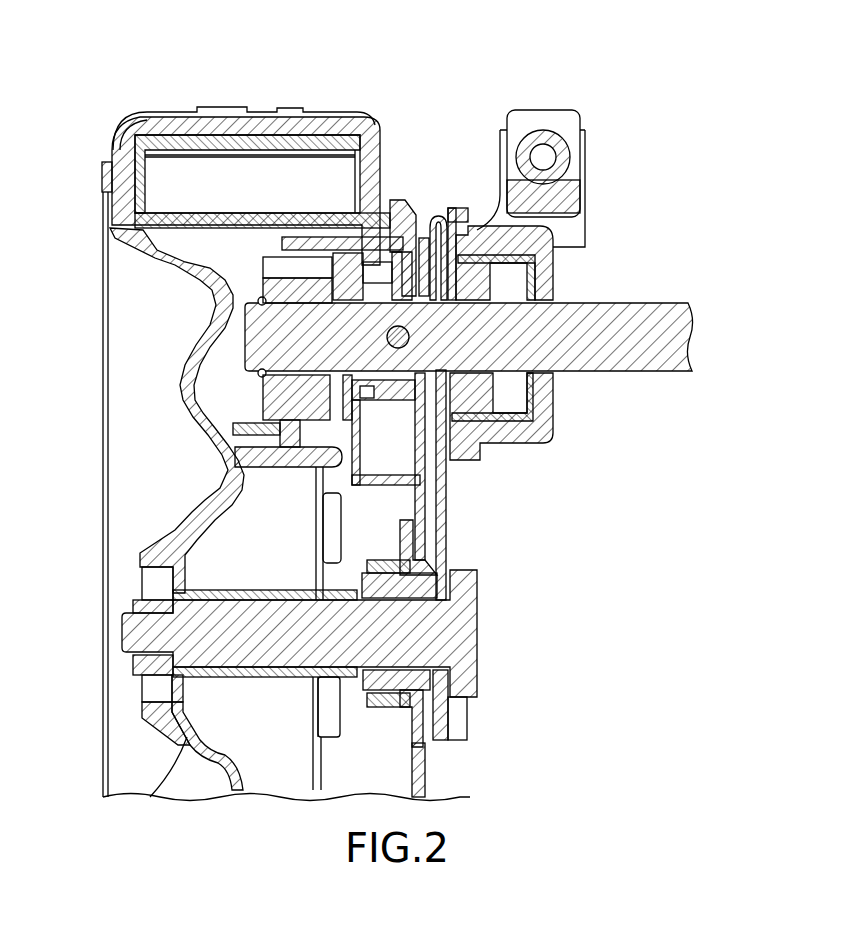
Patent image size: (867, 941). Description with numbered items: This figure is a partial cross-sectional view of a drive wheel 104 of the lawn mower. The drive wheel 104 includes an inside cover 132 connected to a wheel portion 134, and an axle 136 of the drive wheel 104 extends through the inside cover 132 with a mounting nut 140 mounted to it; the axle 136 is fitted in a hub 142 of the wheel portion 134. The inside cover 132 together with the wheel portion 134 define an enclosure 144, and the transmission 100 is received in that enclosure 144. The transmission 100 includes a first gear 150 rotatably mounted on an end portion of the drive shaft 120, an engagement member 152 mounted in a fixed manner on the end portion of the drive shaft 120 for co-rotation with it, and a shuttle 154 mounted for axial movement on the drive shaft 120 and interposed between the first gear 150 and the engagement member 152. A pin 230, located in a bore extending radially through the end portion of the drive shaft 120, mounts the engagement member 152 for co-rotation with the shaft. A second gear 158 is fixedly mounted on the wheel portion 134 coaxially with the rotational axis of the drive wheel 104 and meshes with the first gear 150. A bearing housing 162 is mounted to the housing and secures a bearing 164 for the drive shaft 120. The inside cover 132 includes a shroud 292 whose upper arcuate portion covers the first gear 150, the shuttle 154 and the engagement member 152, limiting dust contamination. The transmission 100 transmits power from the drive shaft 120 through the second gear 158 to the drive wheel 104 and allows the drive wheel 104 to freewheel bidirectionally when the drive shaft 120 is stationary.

The transmission 100 is at (232, 252).
The drive wheel 104 is at (278, 108).
The shroud 292 is at (380, 215).
The shuttle 154 is at (346, 250).
The engagement member 152 is at (446, 230).
The bearing housing 162 is at (562, 272).
The drive shaft 120 is at (650, 302).
The enclosure 144 is at (140, 400).
The first gear 150 is at (265, 408).
The pin 230 is at (397, 348).
The bearing 164 is at (490, 400).
The second gear 158 is at (290, 447).
The mounting nut 140 is at (430, 580).
The hub 142 is at (245, 685).
The axle 136 is at (285, 652).
The wheel portion 134 is at (200, 778).
The inside cover 132 is at (430, 770).